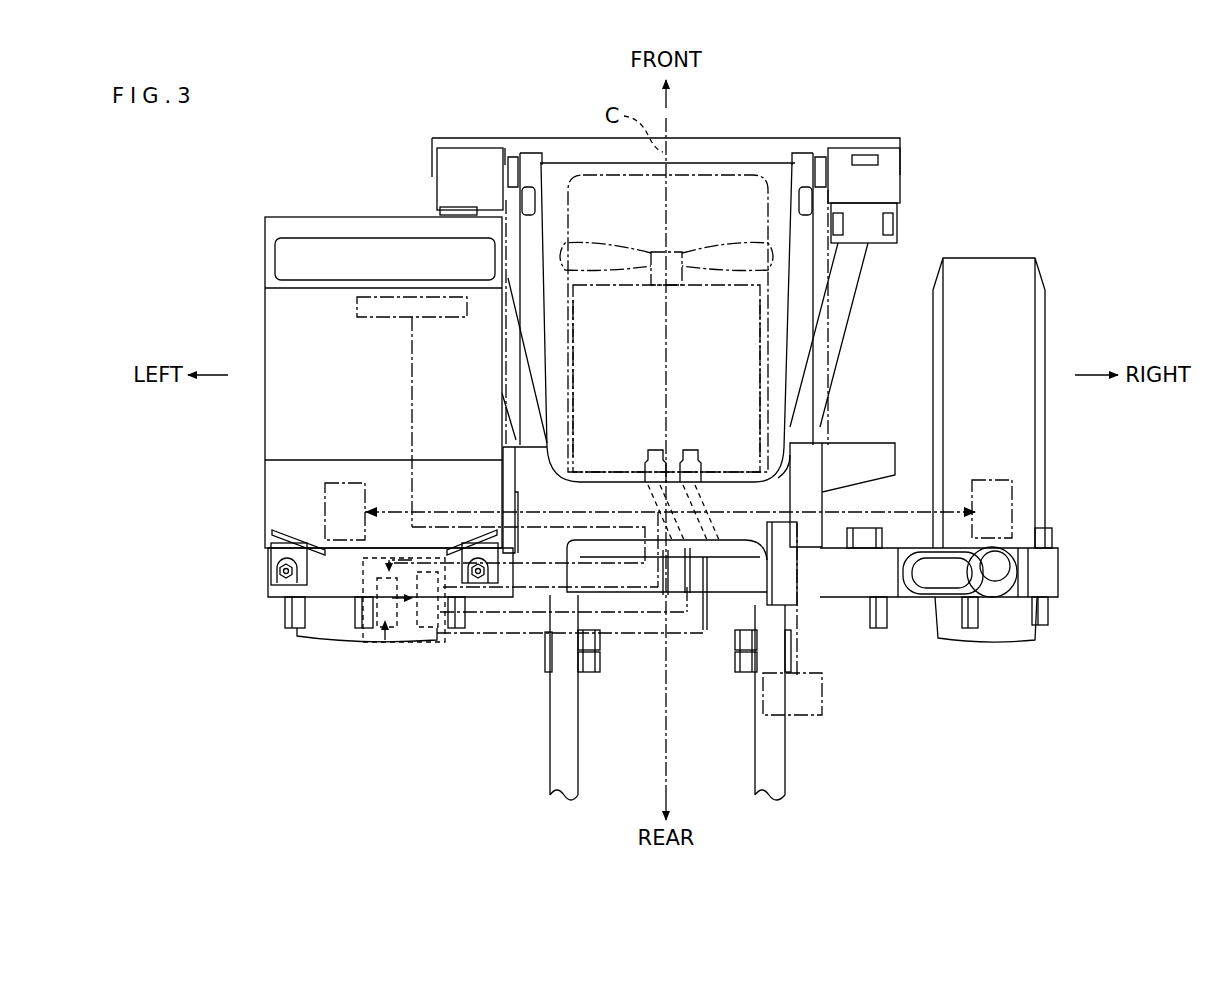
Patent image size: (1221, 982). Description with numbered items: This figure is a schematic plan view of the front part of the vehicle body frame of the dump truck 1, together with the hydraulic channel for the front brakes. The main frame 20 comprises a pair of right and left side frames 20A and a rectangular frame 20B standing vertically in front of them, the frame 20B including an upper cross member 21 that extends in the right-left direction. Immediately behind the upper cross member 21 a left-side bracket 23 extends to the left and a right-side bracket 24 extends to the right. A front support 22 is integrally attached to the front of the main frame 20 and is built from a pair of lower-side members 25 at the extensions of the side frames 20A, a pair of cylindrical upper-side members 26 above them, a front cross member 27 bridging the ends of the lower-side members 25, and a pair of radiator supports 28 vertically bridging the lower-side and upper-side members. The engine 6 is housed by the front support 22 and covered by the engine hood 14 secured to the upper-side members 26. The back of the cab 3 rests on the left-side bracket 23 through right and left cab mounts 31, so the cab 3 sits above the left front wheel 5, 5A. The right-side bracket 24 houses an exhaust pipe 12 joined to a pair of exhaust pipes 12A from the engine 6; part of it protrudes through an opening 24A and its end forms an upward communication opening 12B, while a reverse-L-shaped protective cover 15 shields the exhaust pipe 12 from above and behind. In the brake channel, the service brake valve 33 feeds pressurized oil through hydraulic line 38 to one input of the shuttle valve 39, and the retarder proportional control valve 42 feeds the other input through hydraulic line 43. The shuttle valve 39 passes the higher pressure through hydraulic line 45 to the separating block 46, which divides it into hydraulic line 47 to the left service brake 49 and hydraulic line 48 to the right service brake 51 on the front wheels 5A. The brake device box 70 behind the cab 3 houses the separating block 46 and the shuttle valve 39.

The dump truck 1 is at (1024, 142).
The cab 3 is at (273, 302).
The front wheel 5 is at (314, 640).
The front wheel 5A is at (1045, 435).
The engine 6 is at (621, 285).
The exhaust pipe 12 is at (735, 585).
The exhaust pipes 12A is at (664, 452).
The communication opening 12B is at (992, 582).
The engine hood 14 is at (833, 330).
The protective cover 15 is at (703, 606).
The main frame 20 is at (680, 697).
The side frames 20A is at (553, 748).
The rectangular frame 20B is at (666, 328).
The upper cross member 21 is at (668, 323).
The front support 22 is at (784, 128).
The left-side bracket 23 is at (291, 601).
The right-side bracket 24 is at (1050, 578).
The opening 24A is at (927, 585).
The lower-side members 25 is at (576, 333).
The upper-side members 26 is at (522, 385).
The front cross member 27 is at (683, 148).
The radiator supports 28 is at (441, 188).
The cab mounts 31 is at (276, 562).
The service brake valve 33 is at (362, 318).
The hydraulic line 38 is at (416, 380).
The shuttle valve 39 is at (383, 650).
The retarder proportional control valve 42 is at (824, 699).
The hydraulic line 43 is at (804, 634).
The hydraulic line 45 is at (405, 636).
The separating block 46 is at (433, 624).
The hydraulic line 47 is at (435, 511).
The hydraulic line 48 is at (748, 513).
The service brake 49 is at (345, 485).
The service brake 51 is at (990, 486).
The brake device box 70 is at (366, 574).